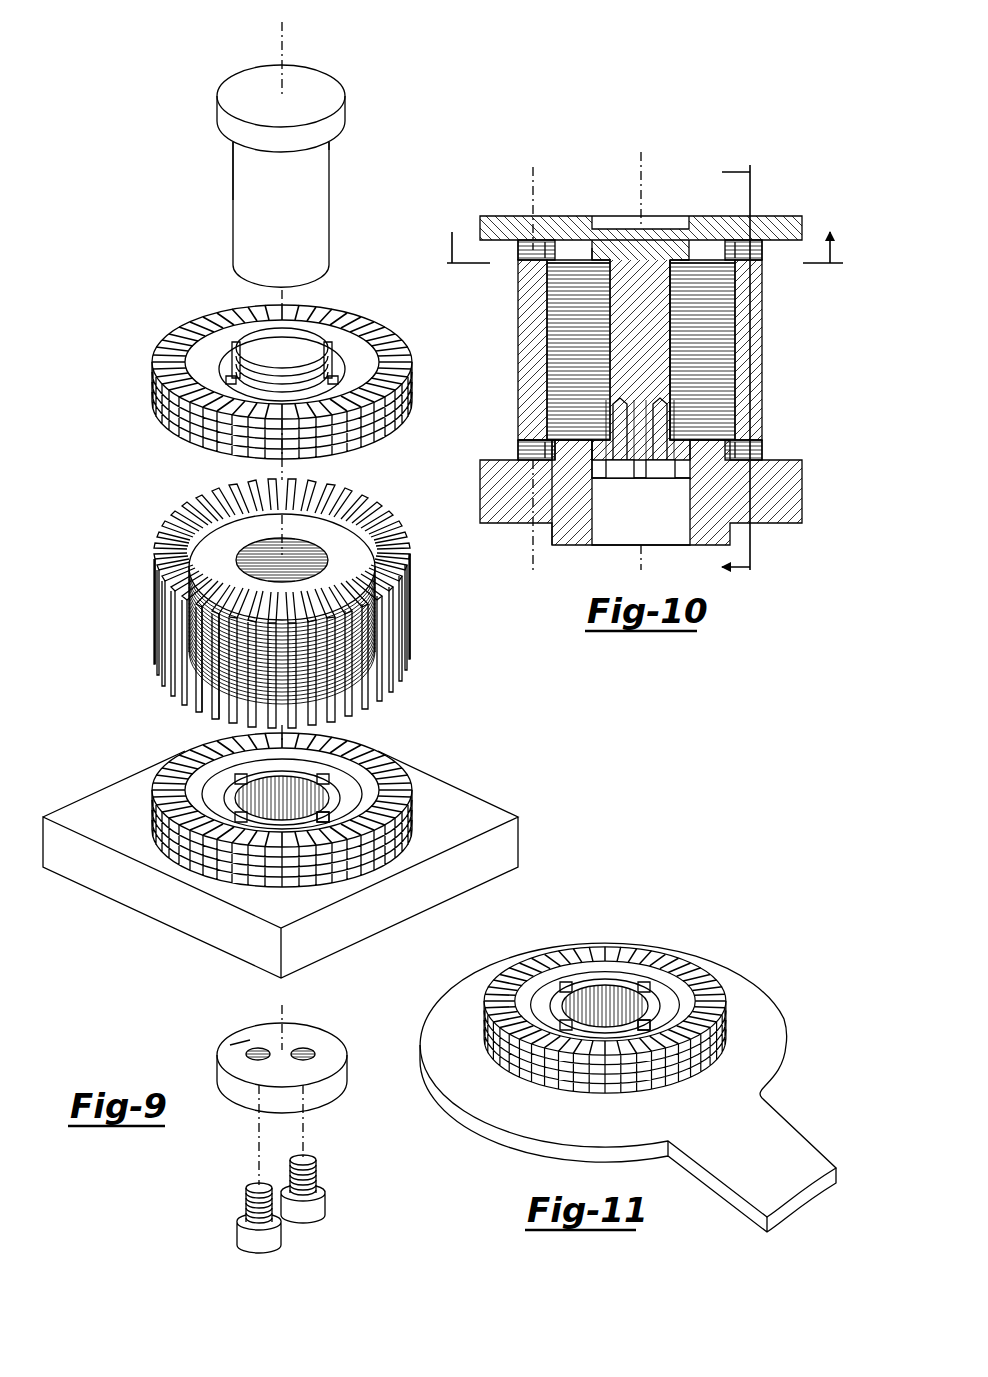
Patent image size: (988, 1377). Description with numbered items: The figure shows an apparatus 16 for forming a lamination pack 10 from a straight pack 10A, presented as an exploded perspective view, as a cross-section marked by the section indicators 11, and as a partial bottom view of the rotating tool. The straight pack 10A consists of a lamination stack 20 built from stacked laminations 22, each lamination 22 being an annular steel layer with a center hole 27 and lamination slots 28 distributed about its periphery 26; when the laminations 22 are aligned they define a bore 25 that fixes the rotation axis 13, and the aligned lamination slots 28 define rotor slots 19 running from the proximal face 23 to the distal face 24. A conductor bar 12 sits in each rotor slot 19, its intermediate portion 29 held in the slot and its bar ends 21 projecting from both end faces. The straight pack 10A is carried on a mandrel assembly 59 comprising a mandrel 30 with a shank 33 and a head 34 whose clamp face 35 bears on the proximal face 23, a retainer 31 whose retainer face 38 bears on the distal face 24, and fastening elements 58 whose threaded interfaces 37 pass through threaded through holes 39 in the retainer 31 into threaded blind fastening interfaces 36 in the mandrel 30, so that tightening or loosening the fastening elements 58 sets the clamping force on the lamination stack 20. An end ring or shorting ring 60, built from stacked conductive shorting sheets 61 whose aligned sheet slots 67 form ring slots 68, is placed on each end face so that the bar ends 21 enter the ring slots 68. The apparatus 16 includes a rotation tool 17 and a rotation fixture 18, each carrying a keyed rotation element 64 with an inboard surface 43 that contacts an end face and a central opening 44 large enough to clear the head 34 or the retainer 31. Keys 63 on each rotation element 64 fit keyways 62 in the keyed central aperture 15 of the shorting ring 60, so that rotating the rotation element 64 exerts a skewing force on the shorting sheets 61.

In FIG. 10, the lamination pack 10 is at (642, 312).
In FIG. 9, the straight pack 10A is at (272, 598).
In FIG. 10, the section line 11 is at (533, 180).
In FIG. 9, the conductor bar 12 is at (277, 598).
In FIG. 10, the conductor bar 12 is at (642, 312).
In FIG. 9, the rotation axis 13 is at (290, 40).
In FIG. 10, the rotation axis 13 is at (645, 175).
In FIG. 9, the central aperture 15 is at (312, 378).
In FIG. 9, the apparatus 16 is at (262, 163).
In FIG. 10, the apparatus 16 is at (660, 310).
In FIG. 11, the rotation tool 17 is at (800, 1035).
In FIG. 9, the rotation fixture 18 is at (540, 828).
In FIG. 10, the rotation fixture 18 is at (666, 492).
In FIG. 9, the rotor slot 19 is at (395, 630).
In FIG. 10, the rotor slot 19 is at (740, 395).
In FIG. 9, the lamination stack 20 is at (272, 598).
In FIG. 9, the bar end 21 is at (410, 515).
In FIG. 10, the bar end 21 is at (522, 255).
In FIG. 9, the lamination 22 is at (160, 585).
In FIG. 10, the lamination 22 is at (740, 318).
In FIG. 9, the proximal face 23 is at (335, 530).
In FIG. 10, the proximal face 23 is at (565, 263).
In FIG. 10, the distal face 24 is at (575, 460).
In FIG. 9, the bore 25 is at (292, 552).
In FIG. 9, the periphery 26 is at (175, 645).
In FIG. 9, the center hole 27 is at (258, 555).
In FIG. 9, the lamination slot 28 is at (220, 670).
In FIG. 10, the lamination slot 28 is at (745, 372).
In FIG. 10, the intermediate portion 29 is at (642, 350).
In FIG. 9, the mandrel 30 is at (283, 176).
In FIG. 10, the mandrel 30 is at (641, 325).
In FIG. 9, the retainer 31 is at (293, 1049).
In FIG. 10, the retainer 31 is at (685, 485).
In FIG. 9, the shank 33 is at (329, 222).
In FIG. 10, the shank 33 is at (682, 455).
In FIG. 9, the head 34 is at (352, 104).
In FIG. 10, the head 34 is at (612, 230).
In FIG. 9, the clamp face 35 is at (222, 142).
In FIG. 10, the clamp face 35 is at (690, 262).
In FIG. 10, the fastening interface 36 is at (650, 430).
In FIG. 9, the threaded interface 37 is at (267, 1171).
In FIG. 10, the threaded interface 37 is at (640, 441).
In FIG. 9, the retainer face 38 is at (230, 1045).
In FIG. 9, the fastening interface 39 is at (258, 1048).
In FIG. 9, the inboard surface 43 is at (332, 805).
In FIG. 10, the inboard surface 43 is at (708, 266).
In FIG. 11, the inboard surface 43 is at (640, 1010).
In FIG. 9, the central opening 44 is at (282, 793).
In FIG. 10, the central opening 44 is at (595, 245).
In FIG. 11, the central opening 44 is at (615, 990).
In FIG. 9, the fastening element 58 is at (228, 1240).
In FIG. 10, the fastening element 58 is at (620, 482).
In FIG. 9, the mandrel assembly 59 is at (205, 218).
In FIG. 10, the mandrel assembly 59 is at (662, 225).
In FIG. 9, the shorting ring 60 is at (284, 597).
In FIG. 10, the shorting ring 60 is at (643, 324).
In FIG. 11, the shorting ring 60 is at (598, 1012).
In FIG. 9, the shorting sheet 61 is at (160, 405).
In FIG. 11, the shorting sheet 61 is at (605, 1001).
In FIG. 9, the keyway 62 is at (360, 335).
In FIG. 9, the key 63 is at (330, 775).
In FIG. 10, the key 63 is at (530, 245).
In FIG. 11, the key 63 is at (575, 975).
In FIG. 9, the rotation element 64 is at (258, 778).
In FIG. 10, the rotation element 64 is at (535, 448).
In FIG. 11, the rotation element 64 is at (598, 974).
In FIG. 9, the sheet slot 67 is at (205, 318).
In FIG. 11, the sheet slot 67 is at (605, 1001).
In FIG. 9, the ring slot 68 is at (185, 435).
In FIG. 11, the ring slot 68 is at (605, 1051).